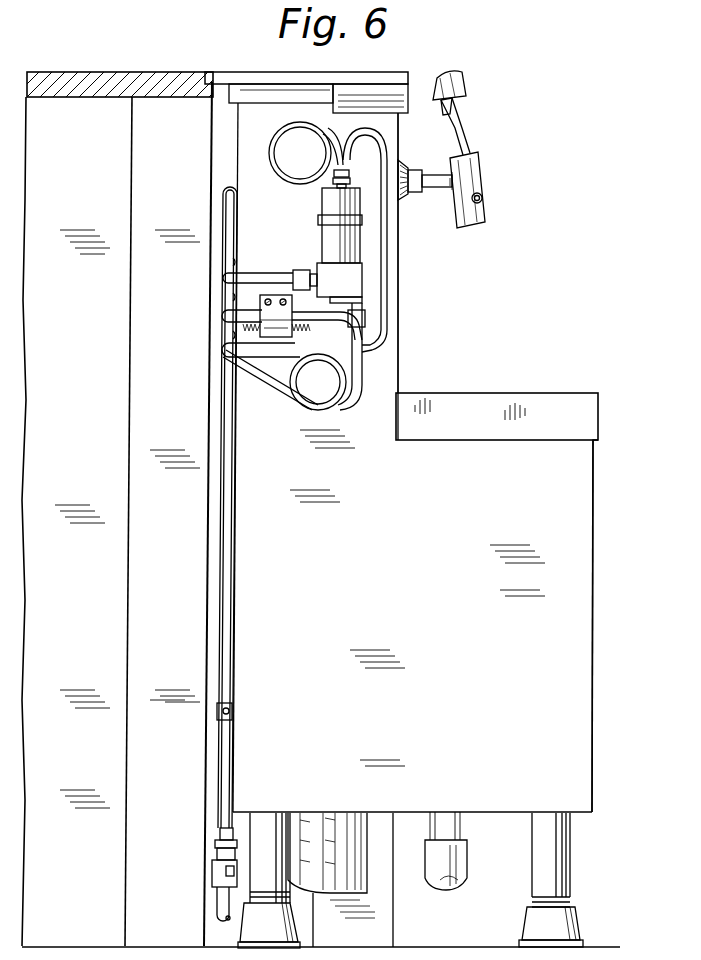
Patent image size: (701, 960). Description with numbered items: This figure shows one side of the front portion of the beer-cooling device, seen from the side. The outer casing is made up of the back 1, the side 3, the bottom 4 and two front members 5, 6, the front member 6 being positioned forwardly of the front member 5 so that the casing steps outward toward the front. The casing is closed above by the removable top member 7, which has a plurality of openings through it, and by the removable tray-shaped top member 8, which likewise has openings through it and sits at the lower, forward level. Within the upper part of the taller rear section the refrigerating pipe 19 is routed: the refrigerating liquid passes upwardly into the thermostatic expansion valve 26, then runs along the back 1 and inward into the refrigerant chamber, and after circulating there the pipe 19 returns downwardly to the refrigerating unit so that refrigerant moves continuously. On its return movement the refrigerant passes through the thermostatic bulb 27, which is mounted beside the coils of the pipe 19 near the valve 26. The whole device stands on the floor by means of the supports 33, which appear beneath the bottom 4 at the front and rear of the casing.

The back 1 is at (236, 146).
The side 3 is at (568, 608).
The bottom 4 is at (493, 813).
The front member 5 is at (399, 348).
The front member 6 is at (593, 532).
The removable top member 7 is at (288, 74).
The removable tray-shaped top member 8 is at (504, 393).
The refrigerating pipe 19 is at (248, 311).
The thermostatic expansion valve 26 is at (348, 250).
The thermostatic bulb 27 is at (272, 318).
The supports 33 is at (267, 832).